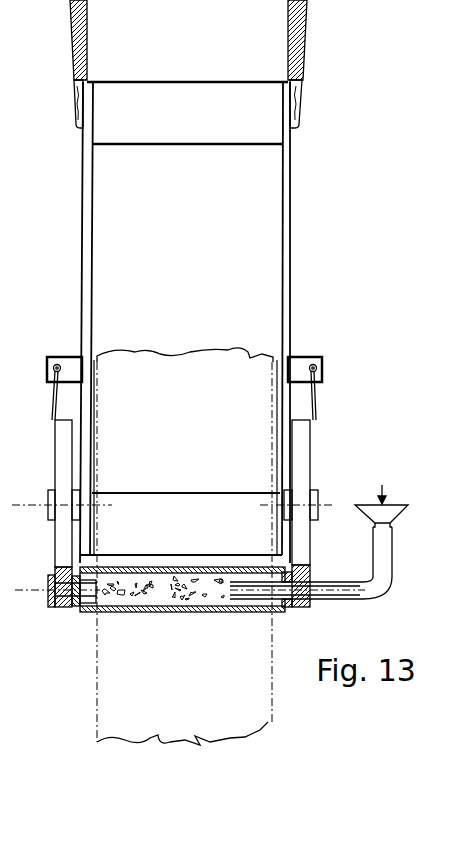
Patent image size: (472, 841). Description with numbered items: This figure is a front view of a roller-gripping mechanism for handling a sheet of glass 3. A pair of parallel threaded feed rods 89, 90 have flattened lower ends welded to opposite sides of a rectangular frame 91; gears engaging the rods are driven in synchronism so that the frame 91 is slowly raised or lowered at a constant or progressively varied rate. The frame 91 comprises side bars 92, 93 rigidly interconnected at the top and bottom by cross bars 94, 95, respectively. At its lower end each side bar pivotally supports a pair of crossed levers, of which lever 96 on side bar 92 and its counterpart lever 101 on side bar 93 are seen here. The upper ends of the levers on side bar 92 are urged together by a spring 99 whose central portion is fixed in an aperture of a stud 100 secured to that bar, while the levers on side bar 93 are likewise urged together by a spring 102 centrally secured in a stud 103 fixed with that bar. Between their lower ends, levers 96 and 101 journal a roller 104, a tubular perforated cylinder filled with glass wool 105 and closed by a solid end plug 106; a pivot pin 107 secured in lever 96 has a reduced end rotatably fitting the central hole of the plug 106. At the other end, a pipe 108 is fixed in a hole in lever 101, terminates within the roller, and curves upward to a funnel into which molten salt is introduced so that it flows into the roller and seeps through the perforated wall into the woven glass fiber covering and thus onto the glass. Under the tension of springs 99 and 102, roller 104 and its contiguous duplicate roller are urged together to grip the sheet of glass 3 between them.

The sheet of glass 3 is at (270, 723).
The threaded feed rod 89 is at (70, 18).
The threaded feed rod 90 is at (288, 25).
The rectangular frame 91 is at (218, 322).
The side bar 92 is at (92, 250).
The side bar 93 is at (290, 262).
The cross bar 94 is at (141, 135).
The cross bar 95 is at (163, 500).
The lever 96 is at (62, 538).
The spring 99 is at (50, 400).
The stud 100 is at (58, 356).
The lever 101 is at (303, 462).
The spring 102 is at (318, 398).
The stud 103 is at (300, 363).
The roller 104 is at (193, 612).
The glass wool 105 is at (145, 600).
The end plug 106 is at (78, 607).
The pivot pin 107 is at (45, 595).
The pipe 108 is at (373, 584).